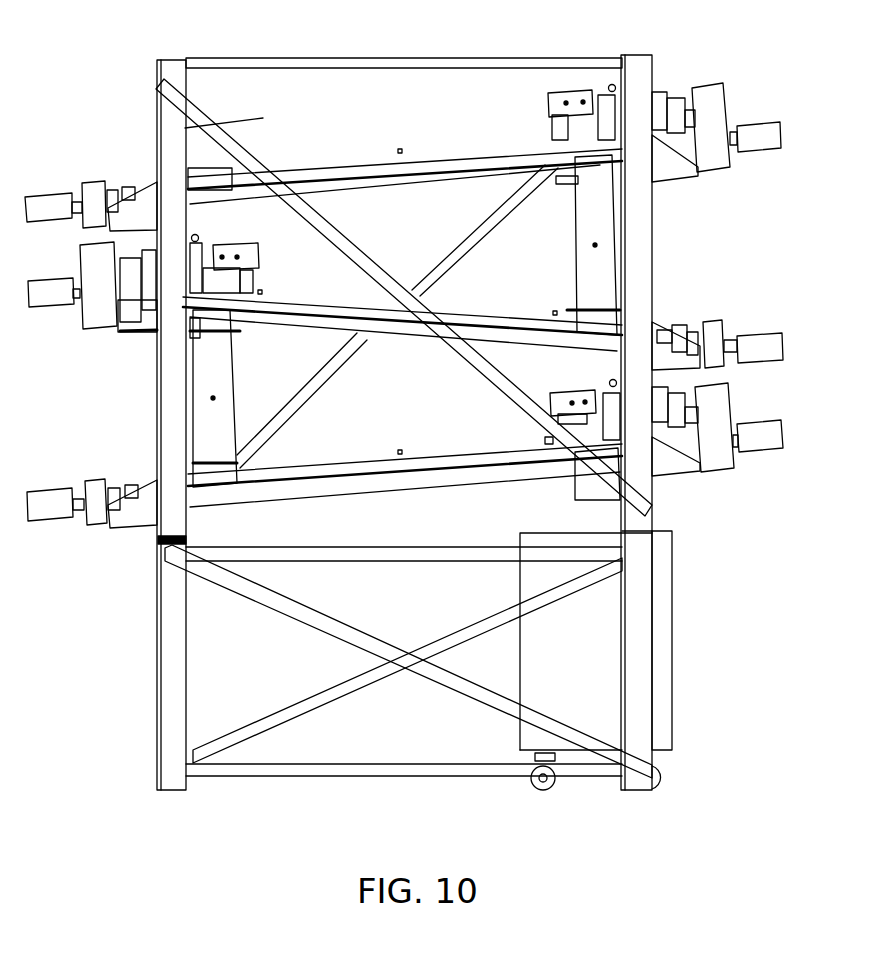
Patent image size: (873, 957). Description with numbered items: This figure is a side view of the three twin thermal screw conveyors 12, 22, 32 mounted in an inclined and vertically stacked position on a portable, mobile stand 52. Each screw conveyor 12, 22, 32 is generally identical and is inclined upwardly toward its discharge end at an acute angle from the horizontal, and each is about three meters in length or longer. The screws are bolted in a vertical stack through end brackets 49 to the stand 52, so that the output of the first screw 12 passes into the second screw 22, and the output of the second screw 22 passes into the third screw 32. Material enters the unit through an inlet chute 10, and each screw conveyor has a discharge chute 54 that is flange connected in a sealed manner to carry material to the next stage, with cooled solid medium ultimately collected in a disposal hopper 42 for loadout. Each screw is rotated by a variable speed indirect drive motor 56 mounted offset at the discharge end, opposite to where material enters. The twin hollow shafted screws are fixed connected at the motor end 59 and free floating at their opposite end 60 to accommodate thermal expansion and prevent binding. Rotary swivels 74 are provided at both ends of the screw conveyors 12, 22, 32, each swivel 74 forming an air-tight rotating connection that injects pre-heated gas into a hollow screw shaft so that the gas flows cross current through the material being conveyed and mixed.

The inlet chute 10 is at (263, 118).
The first thermal screw conveyor 12 is at (443, 158).
The second thermal screw conveyor 22 is at (470, 313).
The third thermal screw conveyor 32 is at (443, 456).
The disposal hopper 42 is at (672, 625).
The end bracket 49 is at (143, 200).
The stand 52 is at (633, 57).
The discharge chute 54 is at (575, 272).
The indirect drive motor 56 is at (548, 128).
The motor end 59 is at (555, 182).
The free floating end 60 is at (240, 208).
The rotary swivel 74 is at (50, 197).